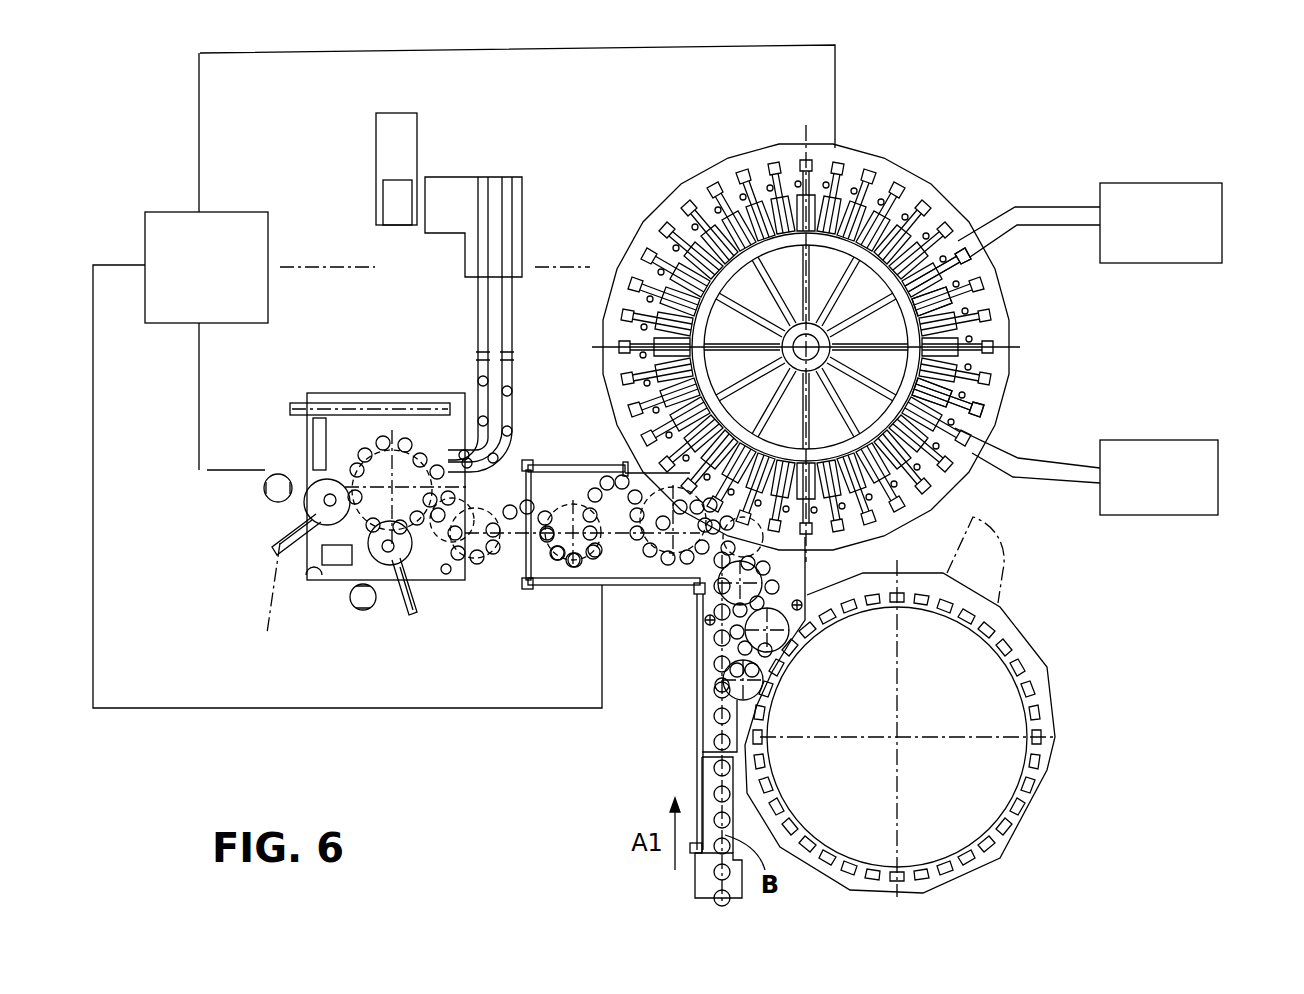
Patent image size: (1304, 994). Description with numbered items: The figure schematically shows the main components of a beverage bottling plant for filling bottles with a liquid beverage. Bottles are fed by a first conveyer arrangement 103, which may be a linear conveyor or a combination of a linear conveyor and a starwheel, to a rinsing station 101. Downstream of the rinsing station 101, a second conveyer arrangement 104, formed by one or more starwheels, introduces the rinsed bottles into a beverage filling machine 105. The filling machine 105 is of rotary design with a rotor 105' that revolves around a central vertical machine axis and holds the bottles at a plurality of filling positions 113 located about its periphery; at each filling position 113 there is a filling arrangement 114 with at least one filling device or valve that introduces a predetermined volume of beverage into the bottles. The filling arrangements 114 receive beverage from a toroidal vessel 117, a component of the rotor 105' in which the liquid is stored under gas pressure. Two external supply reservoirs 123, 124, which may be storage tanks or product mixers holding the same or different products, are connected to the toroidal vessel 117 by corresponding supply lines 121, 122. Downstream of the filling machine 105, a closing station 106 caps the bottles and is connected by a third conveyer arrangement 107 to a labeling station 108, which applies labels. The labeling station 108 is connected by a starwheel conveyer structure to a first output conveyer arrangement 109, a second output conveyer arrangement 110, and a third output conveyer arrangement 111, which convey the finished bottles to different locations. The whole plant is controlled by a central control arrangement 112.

The rinsing station 101 is at (1066, 630).
The first conveyer arrangement 103 is at (735, 818).
The second conveyer arrangement 104 is at (708, 650).
The beverage filling machine 105 is at (869, 343).
The rotor 105' is at (806, 328).
The closing station 106 is at (595, 456).
The third conveyer arrangement 107 is at (532, 594).
The labeling station 108 is at (337, 628).
The first output conveyer arrangement 109 is at (512, 372).
The second output conveyer arrangement 110 is at (478, 312).
The third output conveyer arrangement 111 is at (347, 395).
The central control arrangement 112 is at (188, 284).
The filling positions 113 is at (988, 277).
The filling arrangement 114 is at (992, 376).
The toroidal vessel 117 is at (872, 468).
The supply line 121 is at (1043, 205).
The supply line 122 is at (1050, 458).
The external supply reservoir 123 is at (1212, 232).
The external supply reservoir 124 is at (1216, 487).